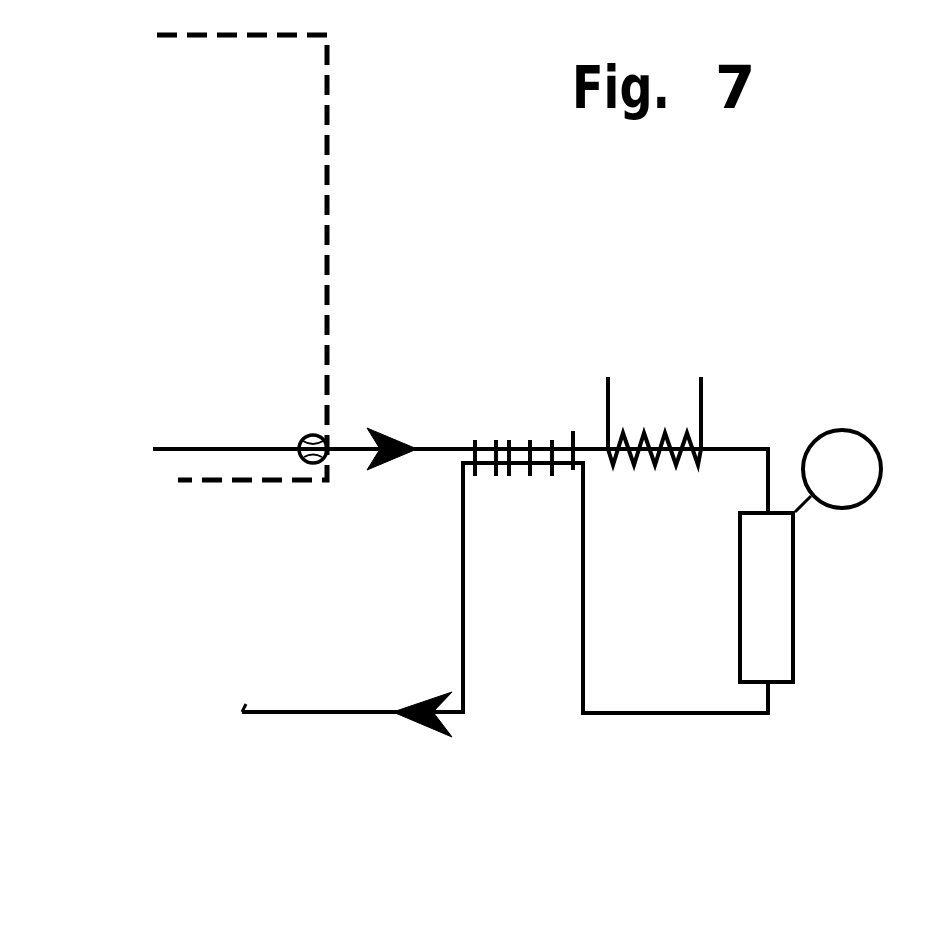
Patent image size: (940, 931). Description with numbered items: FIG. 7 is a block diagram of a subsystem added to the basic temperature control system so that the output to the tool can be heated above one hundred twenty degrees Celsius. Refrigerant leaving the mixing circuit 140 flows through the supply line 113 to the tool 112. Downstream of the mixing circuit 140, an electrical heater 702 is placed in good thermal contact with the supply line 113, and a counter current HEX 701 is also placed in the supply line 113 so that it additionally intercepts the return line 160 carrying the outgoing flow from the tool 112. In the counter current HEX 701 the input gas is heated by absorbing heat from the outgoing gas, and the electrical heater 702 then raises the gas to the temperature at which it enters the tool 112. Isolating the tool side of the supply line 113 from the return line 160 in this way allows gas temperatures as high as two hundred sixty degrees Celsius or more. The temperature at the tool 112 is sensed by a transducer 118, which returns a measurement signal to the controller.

The mixing circuit 140 is at (333, 62).
The supply line 113 is at (437, 449).
The counter current HEX 701 is at (530, 433).
The electrical heater 702 is at (643, 433).
The transducer 118 is at (843, 430).
The tool 112 is at (793, 537).
The return line 160 is at (655, 713).